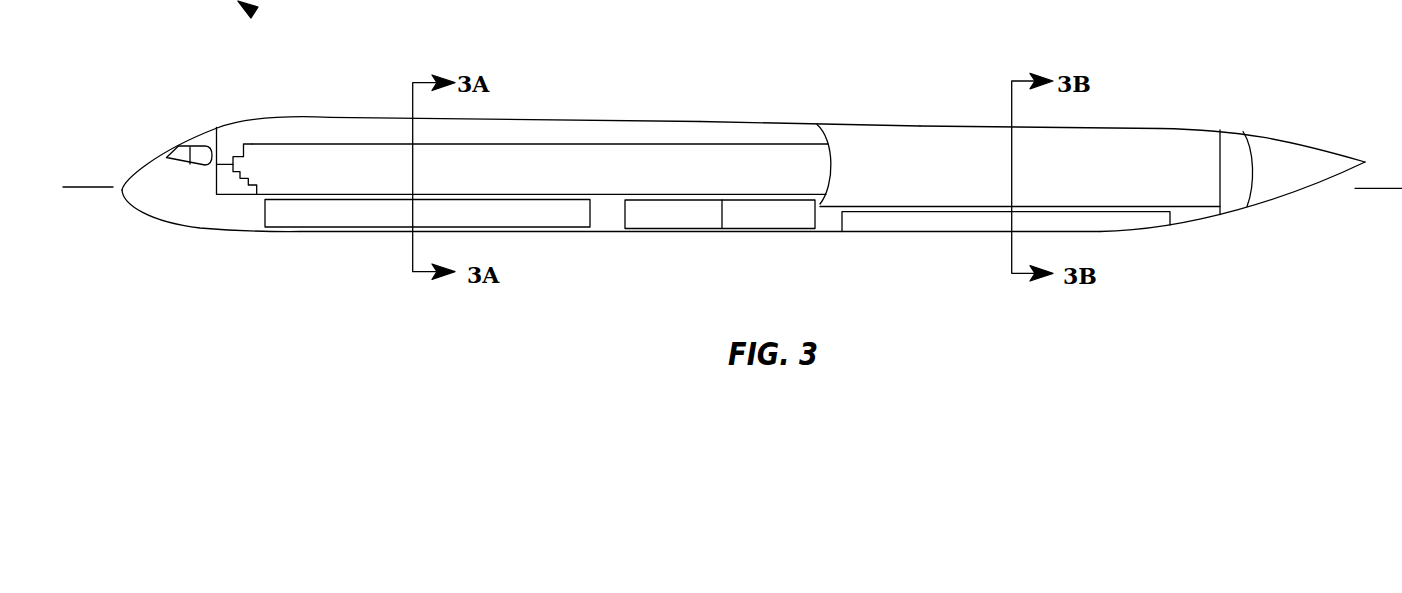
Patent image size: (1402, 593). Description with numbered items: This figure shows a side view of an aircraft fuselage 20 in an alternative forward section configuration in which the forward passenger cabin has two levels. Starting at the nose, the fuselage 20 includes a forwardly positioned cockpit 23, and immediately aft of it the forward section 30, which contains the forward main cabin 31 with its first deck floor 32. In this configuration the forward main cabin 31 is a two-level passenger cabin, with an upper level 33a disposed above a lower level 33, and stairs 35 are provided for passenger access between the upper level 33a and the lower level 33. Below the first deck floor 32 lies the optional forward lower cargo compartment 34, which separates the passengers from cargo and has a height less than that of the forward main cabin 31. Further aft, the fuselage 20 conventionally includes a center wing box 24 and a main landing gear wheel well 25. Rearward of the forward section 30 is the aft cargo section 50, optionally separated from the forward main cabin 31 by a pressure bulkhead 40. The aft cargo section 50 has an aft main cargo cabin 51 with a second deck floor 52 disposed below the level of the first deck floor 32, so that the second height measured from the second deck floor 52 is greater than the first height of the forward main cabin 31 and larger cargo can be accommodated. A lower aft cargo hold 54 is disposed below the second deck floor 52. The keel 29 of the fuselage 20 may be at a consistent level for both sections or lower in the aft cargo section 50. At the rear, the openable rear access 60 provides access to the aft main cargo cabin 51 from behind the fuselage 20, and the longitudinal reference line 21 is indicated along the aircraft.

The fuselage 20 is at (642, 88).
The longitudinal axis 21 is at (98, 186).
The cockpit 23 is at (167, 155).
The center wing box 24 is at (672, 217).
The main landing gear wheel well 25 is at (774, 217).
The keel 29 is at (542, 232).
The forward section 30 is at (573, 137).
The forward main cabin 31 is at (718, 130).
The first deck floor 32 is at (307, 193).
The lower level 33 is at (462, 193).
The upper level 33a is at (305, 143).
The forward lower cargo compartment 34 is at (323, 213).
The stairs 35 is at (242, 148).
The pressure bulkhead 40 is at (833, 155).
The aft cargo section 50 is at (940, 147).
The aft main cargo cabin 51 is at (1102, 138).
The second deck floor 52 is at (913, 207).
The lower aft cargo hold 54 is at (893, 222).
The rear access 60 is at (1300, 81).